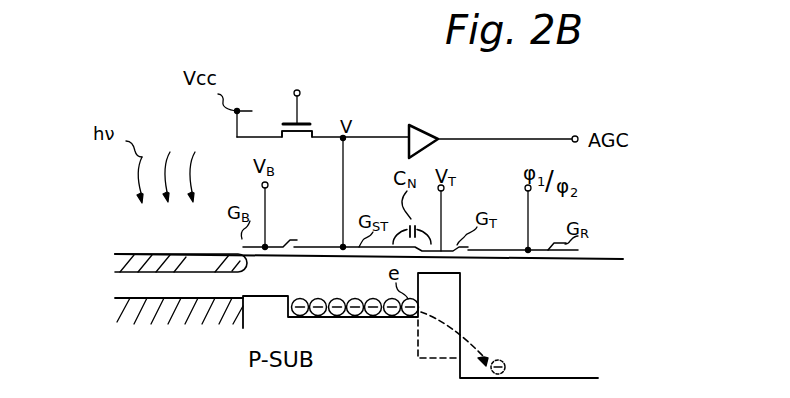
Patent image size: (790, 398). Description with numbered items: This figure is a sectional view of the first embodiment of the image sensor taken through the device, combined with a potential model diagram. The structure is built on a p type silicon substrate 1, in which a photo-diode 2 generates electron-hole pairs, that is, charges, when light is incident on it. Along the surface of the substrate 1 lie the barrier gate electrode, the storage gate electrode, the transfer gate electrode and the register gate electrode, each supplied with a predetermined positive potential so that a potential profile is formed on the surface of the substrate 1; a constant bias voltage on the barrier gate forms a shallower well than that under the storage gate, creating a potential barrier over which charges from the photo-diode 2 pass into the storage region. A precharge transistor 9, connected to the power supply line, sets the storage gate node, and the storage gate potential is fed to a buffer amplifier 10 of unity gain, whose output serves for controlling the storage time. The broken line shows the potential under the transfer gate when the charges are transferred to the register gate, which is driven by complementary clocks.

The p type silicon substrate 1 is at (143, 340).
The photo-diode 2 is at (195, 250).
The precharge transistor 9 is at (299, 119).
The buffer amplifier 10 is at (428, 130).